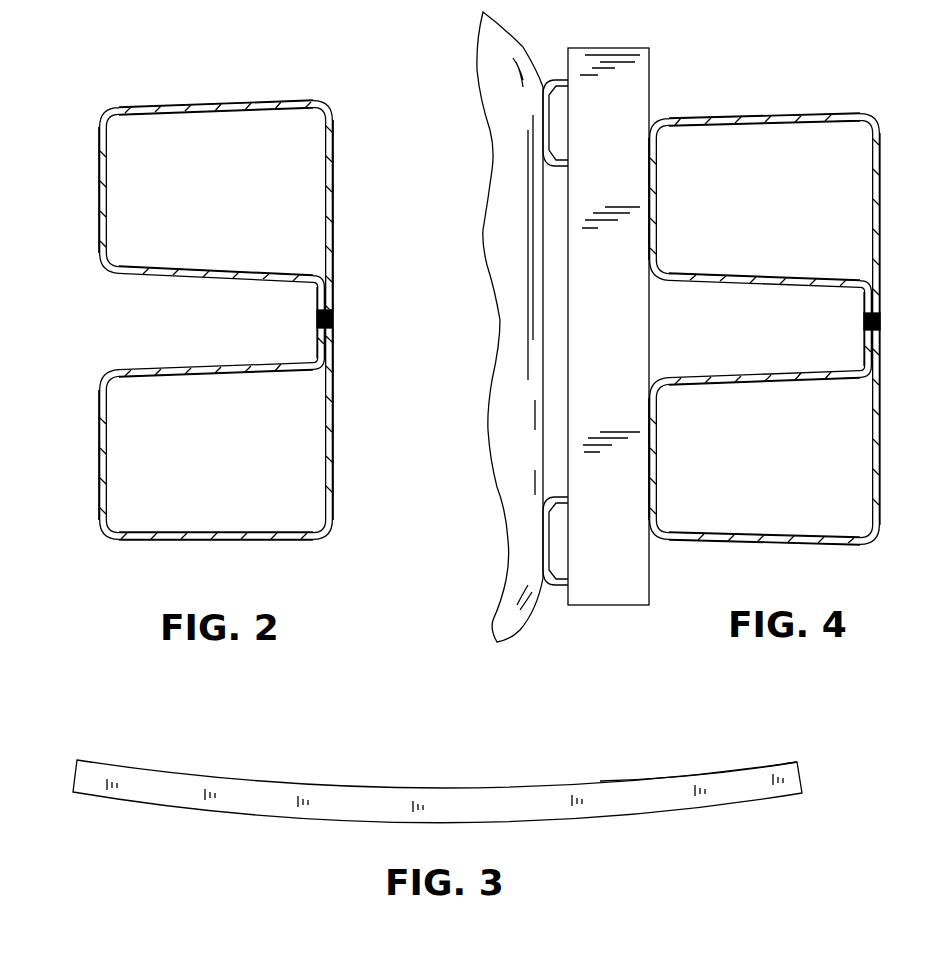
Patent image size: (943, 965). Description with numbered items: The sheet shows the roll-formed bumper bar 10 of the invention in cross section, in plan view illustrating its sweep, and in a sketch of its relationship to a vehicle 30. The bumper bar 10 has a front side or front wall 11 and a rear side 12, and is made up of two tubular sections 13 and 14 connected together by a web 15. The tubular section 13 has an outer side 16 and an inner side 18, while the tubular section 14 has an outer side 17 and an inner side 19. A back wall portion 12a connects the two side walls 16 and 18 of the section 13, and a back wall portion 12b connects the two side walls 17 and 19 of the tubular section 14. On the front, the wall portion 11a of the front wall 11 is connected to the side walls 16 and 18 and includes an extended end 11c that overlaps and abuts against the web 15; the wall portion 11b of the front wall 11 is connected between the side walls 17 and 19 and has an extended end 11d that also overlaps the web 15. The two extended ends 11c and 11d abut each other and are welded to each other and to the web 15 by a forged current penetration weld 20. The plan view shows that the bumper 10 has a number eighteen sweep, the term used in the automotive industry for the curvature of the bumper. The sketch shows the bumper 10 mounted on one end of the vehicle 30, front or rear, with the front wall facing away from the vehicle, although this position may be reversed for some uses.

In FIG. 2, the bumper bar 10 is at (323, 84).
In FIG. 4, the bumper bar 10 is at (801, 93).
In FIG. 3, the bumper bar 10 is at (619, 758).
In FIG. 2, the front wall 11 is at (335, 209).
In FIG. 4, the front wall 11 is at (882, 190).
In FIG. 2, the wall portion 11a is at (334, 158).
In FIG. 2, the wall portion 11b is at (335, 430).
In FIG. 2, the extended end 11c is at (334, 280).
In FIG. 2, the extended end 11d is at (335, 344).
In FIG. 2, the rear side 12 is at (98, 379).
In FIG. 4, the rear side 12 is at (646, 227).
In FIG. 2, the back wall portion 12a is at (101, 200).
In FIG. 4, the back wall portion 12a is at (656, 199).
In FIG. 2, the back wall portion 12b is at (105, 456).
In FIG. 4, the back wall portion 12b is at (658, 467).
In FIG. 2, the tubular section 13 is at (184, 101).
In FIG. 4, the tubular section 13 is at (756, 111).
In FIG. 3, the tubular section 13 is at (748, 770).
In FIG. 2, the tubular section 14 is at (196, 546).
In FIG. 4, the tubular section 14 is at (723, 547).
In FIG. 2, the web 15 is at (316, 338).
In FIG. 4, the web 15 is at (864, 340).
In FIG. 2, the outer side 16 is at (220, 116).
In FIG. 4, the outer side 16 is at (733, 126).
In FIG. 2, the outer side 17 is at (226, 532).
In FIG. 4, the outer side 17 is at (772, 535).
In FIG. 2, the inner side 18 is at (176, 266).
In FIG. 4, the inner side 18 is at (703, 282).
In FIG. 2, the inner side 19 is at (200, 376).
In FIG. 4, the inner side 19 is at (752, 381).
In FIG. 2, the forged current penetration weld 20 is at (336, 318).
In FIG. 4, the forged current penetration weld 20 is at (883, 320).
In FIG. 4, the vehicle 30 is at (520, 40).